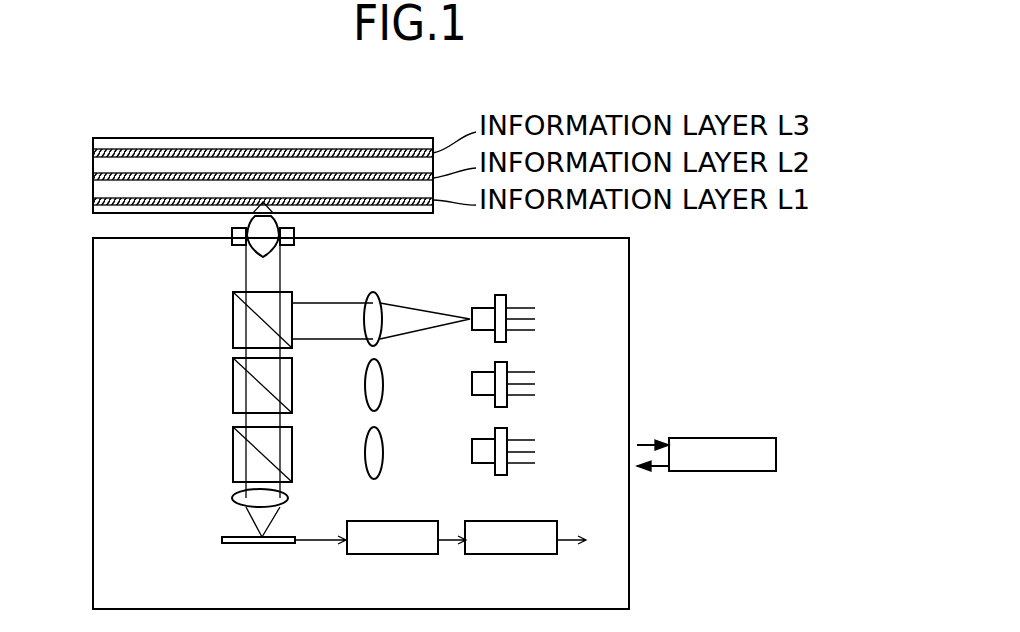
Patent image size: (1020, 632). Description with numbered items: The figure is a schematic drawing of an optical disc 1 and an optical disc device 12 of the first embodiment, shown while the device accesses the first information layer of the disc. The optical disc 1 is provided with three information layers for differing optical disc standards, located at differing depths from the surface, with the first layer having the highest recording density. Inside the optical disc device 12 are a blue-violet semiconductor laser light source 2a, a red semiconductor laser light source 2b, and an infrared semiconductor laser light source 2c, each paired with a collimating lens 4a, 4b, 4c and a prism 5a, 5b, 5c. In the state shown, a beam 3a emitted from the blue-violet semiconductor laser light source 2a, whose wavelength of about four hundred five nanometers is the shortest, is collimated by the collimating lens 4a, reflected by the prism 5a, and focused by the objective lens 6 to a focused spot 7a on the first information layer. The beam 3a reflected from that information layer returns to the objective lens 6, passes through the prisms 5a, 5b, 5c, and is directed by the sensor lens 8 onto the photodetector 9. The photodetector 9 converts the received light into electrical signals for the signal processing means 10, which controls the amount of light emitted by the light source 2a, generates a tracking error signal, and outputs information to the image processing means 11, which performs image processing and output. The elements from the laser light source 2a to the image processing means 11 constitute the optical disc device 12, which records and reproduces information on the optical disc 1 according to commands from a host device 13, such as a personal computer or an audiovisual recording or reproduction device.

The optical disc 1 is at (390, 145).
The blue-violet semiconductor laser light source 2a is at (500, 295).
The red semiconductor laser light source 2b is at (503, 362).
The infrared semiconductor laser light source 2c is at (503, 430).
The beam from blue-violet semiconductor laser light source 3a is at (426, 314).
The collimating lens 4a is at (372, 293).
The collimating lens 4b is at (385, 376).
The collimating lens 4c is at (385, 444).
The prism 5a is at (233, 320).
The prism 5b is at (233, 389).
The prism 5c is at (233, 450).
The objective lens 6 is at (232, 237).
The focused spot from blue-violet semiconductor laser light source 7a is at (262, 202).
The sensor lens 8 is at (232, 498).
The photodetector 9 is at (262, 545).
The signal processing means 10 is at (396, 555).
The image processing means 11 is at (515, 555).
The optical disc device 12 is at (630, 278).
The host device 13 is at (723, 438).